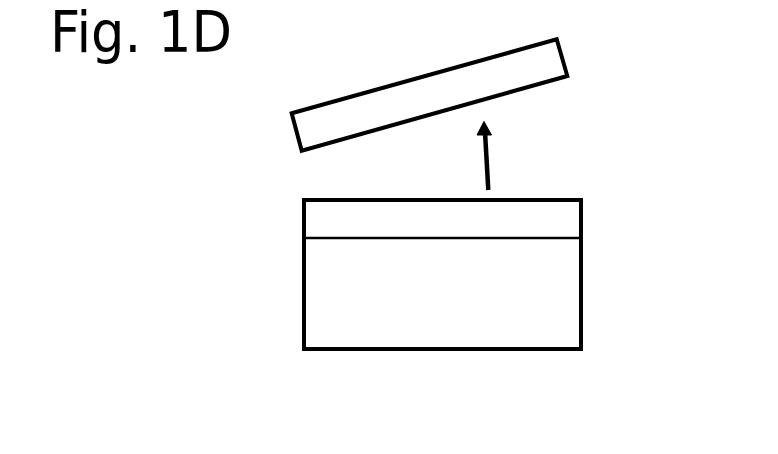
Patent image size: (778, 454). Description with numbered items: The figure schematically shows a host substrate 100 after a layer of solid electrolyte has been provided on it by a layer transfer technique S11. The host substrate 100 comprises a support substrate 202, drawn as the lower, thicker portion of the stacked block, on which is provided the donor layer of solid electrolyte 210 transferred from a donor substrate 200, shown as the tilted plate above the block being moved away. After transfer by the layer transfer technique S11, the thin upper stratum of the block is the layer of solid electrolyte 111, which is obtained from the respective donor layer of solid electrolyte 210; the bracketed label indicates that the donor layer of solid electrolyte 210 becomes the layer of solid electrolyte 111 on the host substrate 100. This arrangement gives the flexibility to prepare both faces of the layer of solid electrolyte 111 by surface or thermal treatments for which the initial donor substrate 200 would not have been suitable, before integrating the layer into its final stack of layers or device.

The donor substrate 200 is at (282, 138).
The host substrate 100 is at (328, 363).
The layer of solid electrolyte 111 is at (280, 203).
The donor layer of solid electrolyte 210 is at (442, 219).
The support substrate 202 is at (296, 238).
The layer transfer technique S11 is at (511, 156).